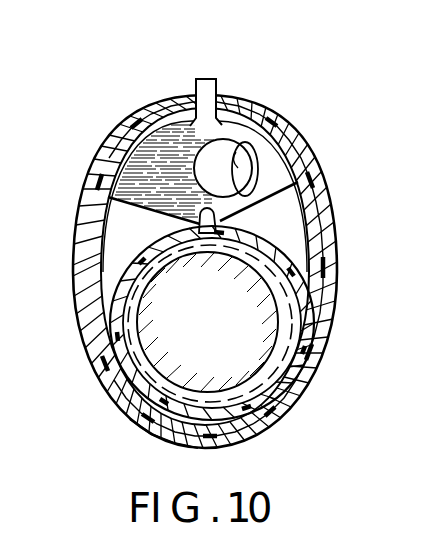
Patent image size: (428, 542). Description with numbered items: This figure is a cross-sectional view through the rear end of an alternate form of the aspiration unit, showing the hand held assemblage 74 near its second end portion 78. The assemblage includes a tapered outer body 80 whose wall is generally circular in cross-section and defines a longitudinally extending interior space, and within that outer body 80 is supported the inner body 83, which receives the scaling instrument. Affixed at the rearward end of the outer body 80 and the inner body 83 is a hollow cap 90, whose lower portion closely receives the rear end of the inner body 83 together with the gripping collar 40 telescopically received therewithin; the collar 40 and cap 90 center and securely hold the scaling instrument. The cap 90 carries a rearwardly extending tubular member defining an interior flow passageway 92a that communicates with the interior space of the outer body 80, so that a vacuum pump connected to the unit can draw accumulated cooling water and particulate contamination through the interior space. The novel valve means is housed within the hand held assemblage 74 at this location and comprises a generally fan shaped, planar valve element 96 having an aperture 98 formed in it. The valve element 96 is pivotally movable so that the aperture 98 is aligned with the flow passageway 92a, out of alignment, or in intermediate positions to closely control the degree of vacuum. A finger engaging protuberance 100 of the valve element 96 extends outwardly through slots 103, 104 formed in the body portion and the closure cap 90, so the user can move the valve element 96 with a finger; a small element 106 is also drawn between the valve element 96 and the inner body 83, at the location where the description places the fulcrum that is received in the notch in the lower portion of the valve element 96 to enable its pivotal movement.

The gripping collar 40 is at (134, 359).
The hand held assemblage 74 is at (313, 102).
The second end portion 78 is at (318, 382).
The tapered outer body 80 is at (137, 417).
The inner body 83 is at (294, 263).
The hollow cap 90 is at (343, 320).
The interior flow passageway 92a is at (234, 142).
The valve element 96 is at (160, 153).
The aperture 98 is at (250, 176).
The finger engaging protuberance 100 is at (207, 84).
The slot 103 is at (172, 108).
The slot 104 is at (248, 112).
The connecting nub 106 is at (200, 210).